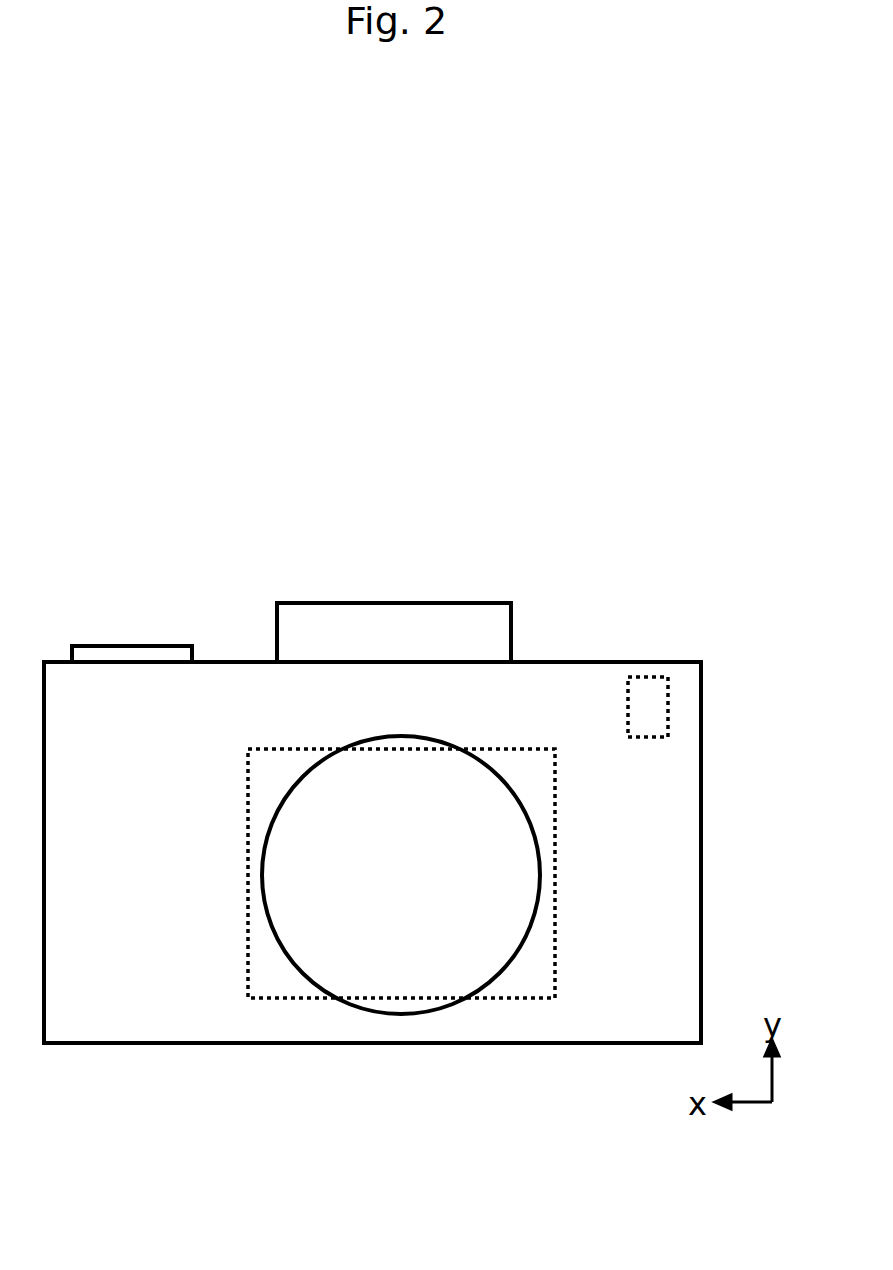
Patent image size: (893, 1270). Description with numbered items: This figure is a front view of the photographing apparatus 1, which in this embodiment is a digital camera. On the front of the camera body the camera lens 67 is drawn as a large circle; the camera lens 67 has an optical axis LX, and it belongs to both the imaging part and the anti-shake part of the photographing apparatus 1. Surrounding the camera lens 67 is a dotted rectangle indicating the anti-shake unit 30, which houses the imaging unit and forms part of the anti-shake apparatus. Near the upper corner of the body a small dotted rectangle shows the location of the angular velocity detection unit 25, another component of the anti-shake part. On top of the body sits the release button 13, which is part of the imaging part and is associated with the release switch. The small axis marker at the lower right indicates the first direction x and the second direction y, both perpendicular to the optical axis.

The photographing apparatus 1 is at (702, 662).
The release button 13 is at (118, 646).
The angular velocity detection unit 25 is at (658, 677).
The anti-shake unit 30 is at (248, 892).
The camera lens 67 is at (277, 807).